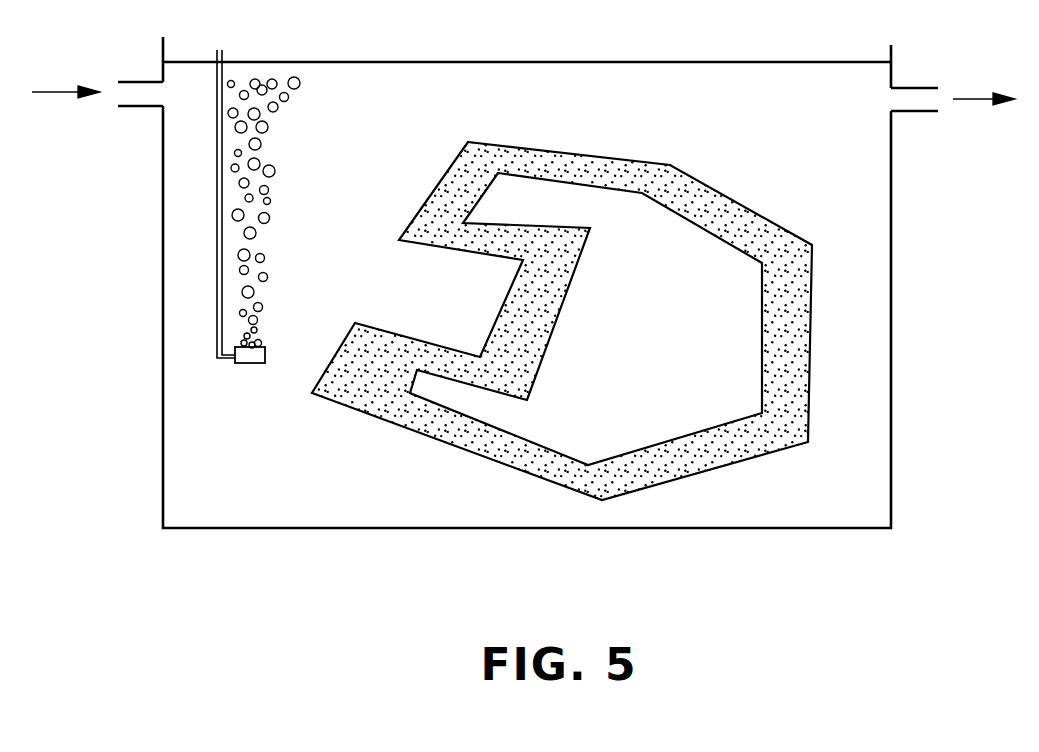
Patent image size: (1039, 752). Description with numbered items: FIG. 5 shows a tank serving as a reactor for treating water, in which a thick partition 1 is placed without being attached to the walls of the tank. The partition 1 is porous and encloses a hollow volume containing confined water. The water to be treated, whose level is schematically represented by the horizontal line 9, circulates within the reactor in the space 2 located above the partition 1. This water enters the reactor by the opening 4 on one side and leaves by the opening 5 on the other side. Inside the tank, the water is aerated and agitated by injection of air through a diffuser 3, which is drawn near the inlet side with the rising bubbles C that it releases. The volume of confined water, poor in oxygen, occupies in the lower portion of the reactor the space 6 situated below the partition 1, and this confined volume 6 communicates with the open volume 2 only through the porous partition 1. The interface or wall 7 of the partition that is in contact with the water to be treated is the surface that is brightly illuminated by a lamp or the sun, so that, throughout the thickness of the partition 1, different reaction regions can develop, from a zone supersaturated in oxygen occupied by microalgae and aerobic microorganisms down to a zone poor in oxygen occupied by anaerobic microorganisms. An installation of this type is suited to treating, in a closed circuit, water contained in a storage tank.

The partition 1 is at (727, 443).
The space above the partition 2 is at (527, 272).
The diffuser 3 is at (244, 363).
The opening 4 is at (113, 90).
The opening 5 is at (936, 97).
The space below the partition 6 is at (552, 428).
The interface 7 is at (640, 452).
The horizontal line 9 is at (700, 63).
The bubbles C is at (264, 214).